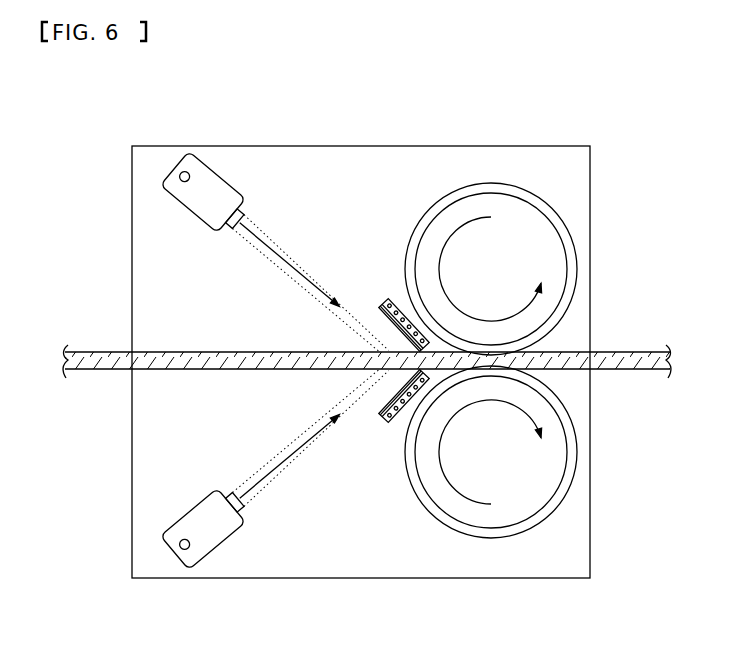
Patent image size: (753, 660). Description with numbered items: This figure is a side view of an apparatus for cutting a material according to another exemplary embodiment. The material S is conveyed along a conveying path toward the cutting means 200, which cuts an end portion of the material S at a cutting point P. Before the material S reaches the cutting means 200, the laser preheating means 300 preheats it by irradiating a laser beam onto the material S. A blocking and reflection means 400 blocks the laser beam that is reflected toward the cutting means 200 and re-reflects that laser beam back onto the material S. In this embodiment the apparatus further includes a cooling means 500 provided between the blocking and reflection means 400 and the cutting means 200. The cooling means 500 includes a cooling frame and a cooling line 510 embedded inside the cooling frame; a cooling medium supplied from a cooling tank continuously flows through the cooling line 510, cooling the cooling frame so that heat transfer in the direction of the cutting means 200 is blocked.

The cutting means 200 is at (492, 184).
The laser preheating means 300 is at (229, 179).
The blocking and reflection means 400 is at (382, 306).
The cooling means 500 is at (389, 302).
The cooling line 510 is at (409, 320).
The material S is at (100, 351).
The cutting point P is at (535, 356).